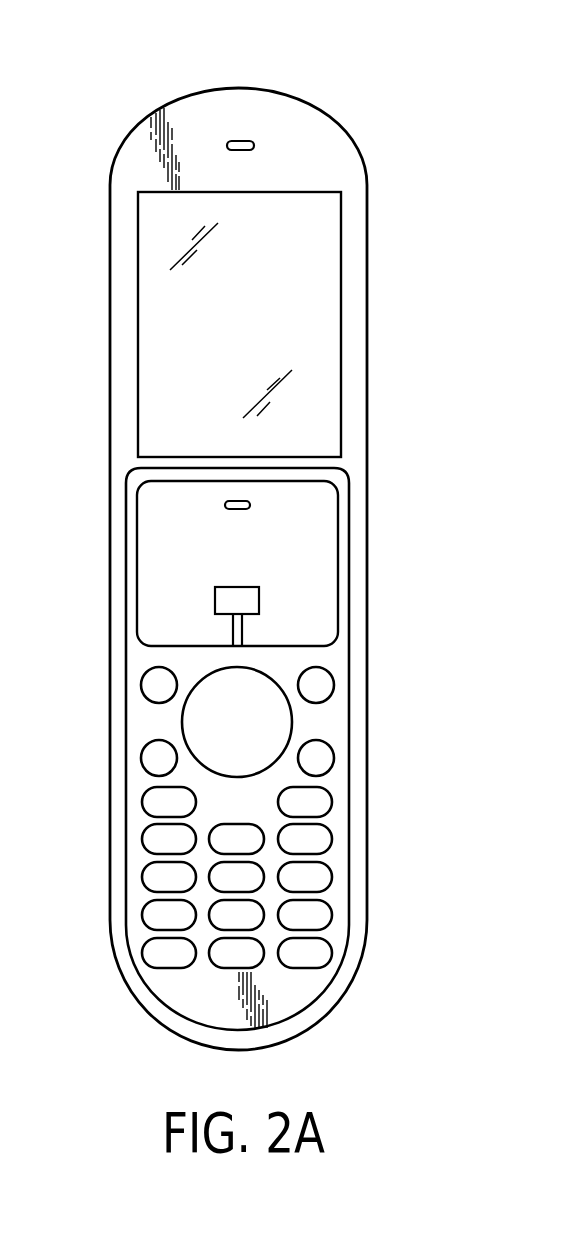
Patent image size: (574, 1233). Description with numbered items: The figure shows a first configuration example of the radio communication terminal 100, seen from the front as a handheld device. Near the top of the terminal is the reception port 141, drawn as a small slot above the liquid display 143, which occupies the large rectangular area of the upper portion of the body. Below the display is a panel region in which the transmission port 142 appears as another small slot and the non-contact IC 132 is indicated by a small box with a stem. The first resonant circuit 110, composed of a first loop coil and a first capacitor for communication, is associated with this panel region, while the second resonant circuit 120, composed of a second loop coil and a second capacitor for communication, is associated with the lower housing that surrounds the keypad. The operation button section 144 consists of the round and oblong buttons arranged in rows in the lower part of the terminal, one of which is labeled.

The radio communication terminal 100 is at (284, 82).
The first resonant circuit 110 is at (338, 533).
The second resonant circuit 120 is at (349, 752).
The non-contact IC 132 is at (259, 601).
The reception port 141 is at (254, 146).
The transmission port 142 is at (225, 506).
The liquid display 143 is at (261, 337).
The operation button section 144 is at (160, 840).